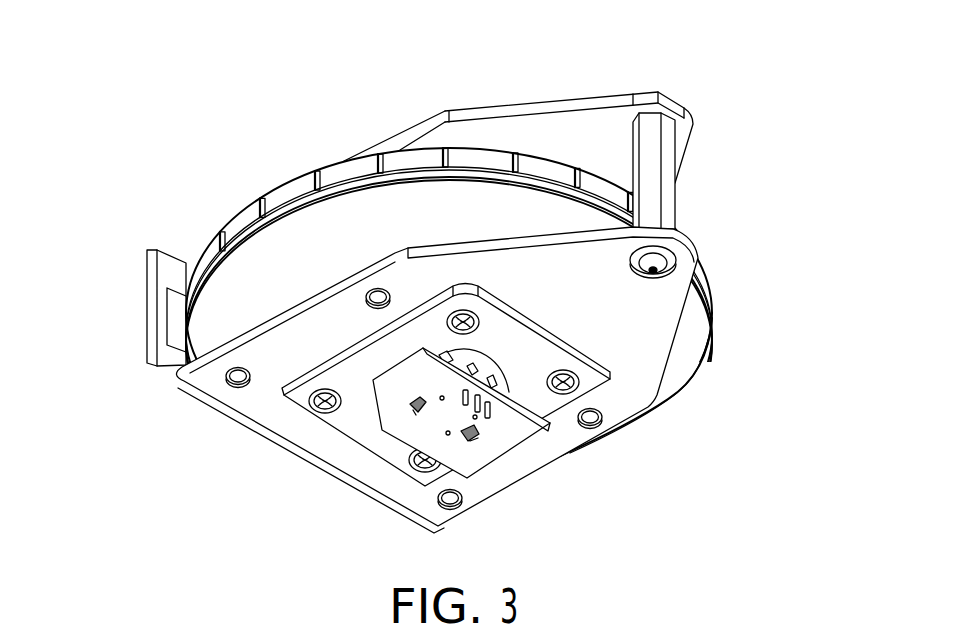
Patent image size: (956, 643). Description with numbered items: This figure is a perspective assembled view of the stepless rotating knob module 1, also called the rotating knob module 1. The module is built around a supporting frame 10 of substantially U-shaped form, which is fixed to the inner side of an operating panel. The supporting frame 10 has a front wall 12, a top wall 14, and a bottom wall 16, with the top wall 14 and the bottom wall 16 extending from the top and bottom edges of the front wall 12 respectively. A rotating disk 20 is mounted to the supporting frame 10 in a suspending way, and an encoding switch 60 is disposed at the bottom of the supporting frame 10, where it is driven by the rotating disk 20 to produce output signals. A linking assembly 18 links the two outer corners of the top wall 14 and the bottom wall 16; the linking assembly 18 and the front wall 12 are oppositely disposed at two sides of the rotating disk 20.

The stepless rotating knob module 1 is at (210, 44).
The supporting frame 10 is at (598, 84).
The front wall 12 is at (150, 279).
The top wall 14 is at (547, 102).
The bottom wall 16 is at (635, 388).
The linking assembly 18 is at (682, 145).
The rotating disk 20 is at (232, 194).
The encoding switch 60 is at (520, 452).